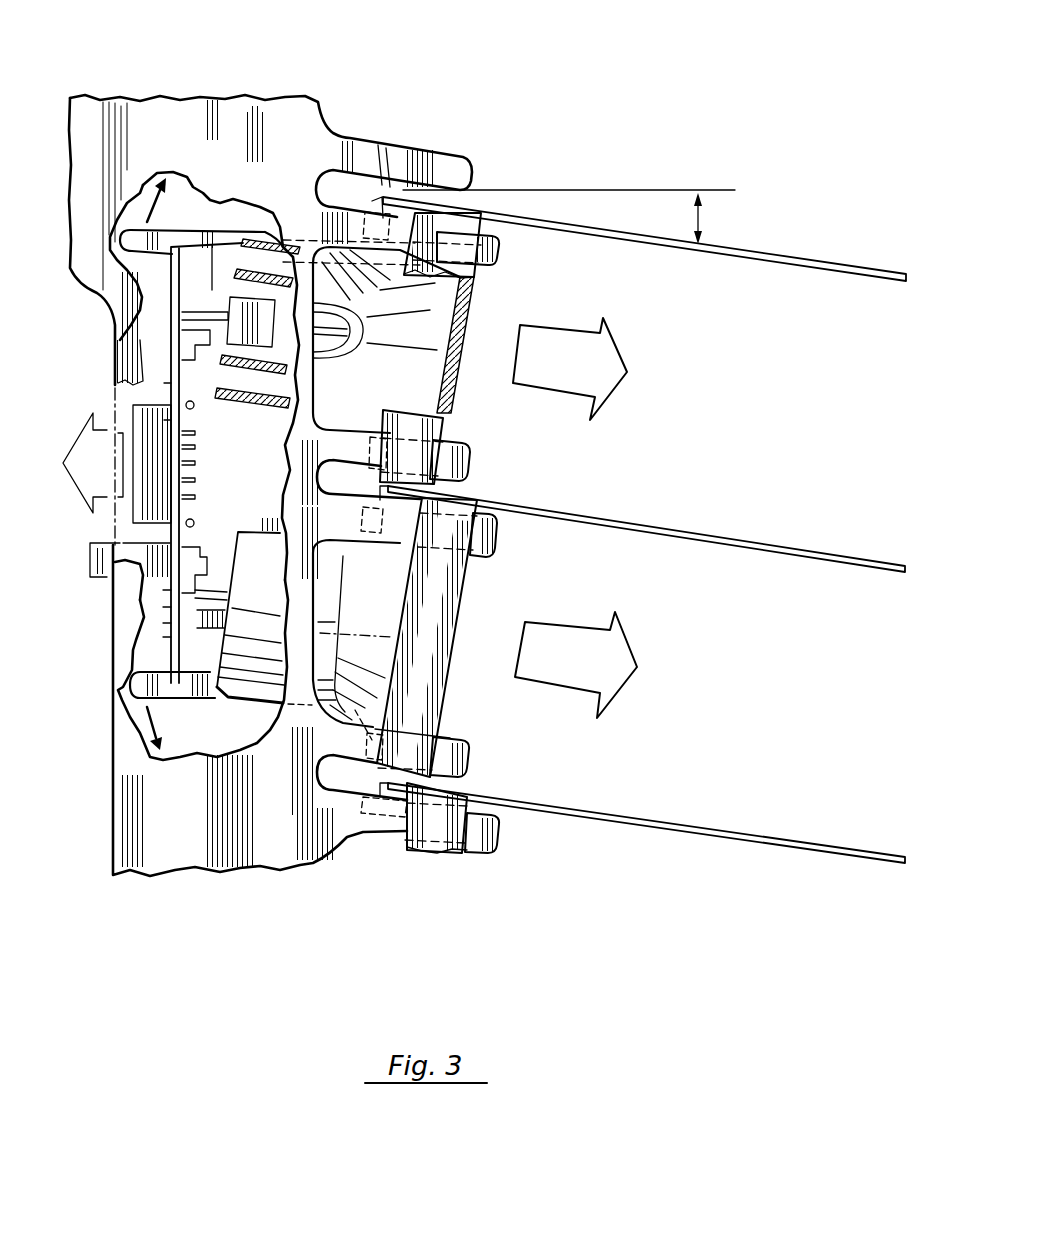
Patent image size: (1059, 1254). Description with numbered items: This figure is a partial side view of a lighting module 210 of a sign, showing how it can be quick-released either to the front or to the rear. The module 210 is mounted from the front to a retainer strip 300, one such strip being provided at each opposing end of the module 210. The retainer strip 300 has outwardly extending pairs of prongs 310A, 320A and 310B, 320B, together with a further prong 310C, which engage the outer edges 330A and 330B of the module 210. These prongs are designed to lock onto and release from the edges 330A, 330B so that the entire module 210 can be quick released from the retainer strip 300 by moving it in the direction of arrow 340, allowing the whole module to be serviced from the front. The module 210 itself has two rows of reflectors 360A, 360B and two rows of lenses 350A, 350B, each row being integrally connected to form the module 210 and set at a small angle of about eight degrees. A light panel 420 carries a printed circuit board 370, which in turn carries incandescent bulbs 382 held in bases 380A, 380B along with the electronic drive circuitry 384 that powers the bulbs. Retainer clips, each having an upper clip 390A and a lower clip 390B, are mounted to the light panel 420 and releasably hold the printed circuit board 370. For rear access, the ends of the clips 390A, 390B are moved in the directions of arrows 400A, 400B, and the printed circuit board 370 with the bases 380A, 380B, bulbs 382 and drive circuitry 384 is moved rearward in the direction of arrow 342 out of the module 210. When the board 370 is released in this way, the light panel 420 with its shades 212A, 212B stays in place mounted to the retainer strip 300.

The module 210 is at (650, 146).
The shade 212A is at (770, 250).
The shade 212B is at (743, 537).
The retainer strip 300 is at (188, 110).
The prong 310A is at (500, 247).
The prong 310B is at (495, 540).
The prong 310C is at (500, 835).
The prong 320A is at (469, 462).
The prong 320B is at (457, 758).
The outer edge of module 330A is at (455, 238).
The outer edge of module 330B is at (415, 698).
The arrow of front quick-release direction 340 is at (583, 373).
The arrow of rear quick-release direction 342 is at (93, 457).
The lens 350A is at (473, 315).
The lens 350B is at (458, 640).
The reflector 360A is at (428, 386).
The reflector 360B is at (373, 603).
The printed circuit board 370 is at (171, 643).
The base 380A is at (210, 313).
The base 380B is at (202, 620).
The incandescent bulb 382 is at (347, 323).
The electronic drive circuitry 384 is at (188, 570).
The upper clip 390A is at (165, 237).
The lower clip 390B is at (130, 727).
The arrow of clip release direction 400A is at (140, 190).
The arrow of clip release direction 400B is at (160, 718).
The light panel 420 is at (465, 404).